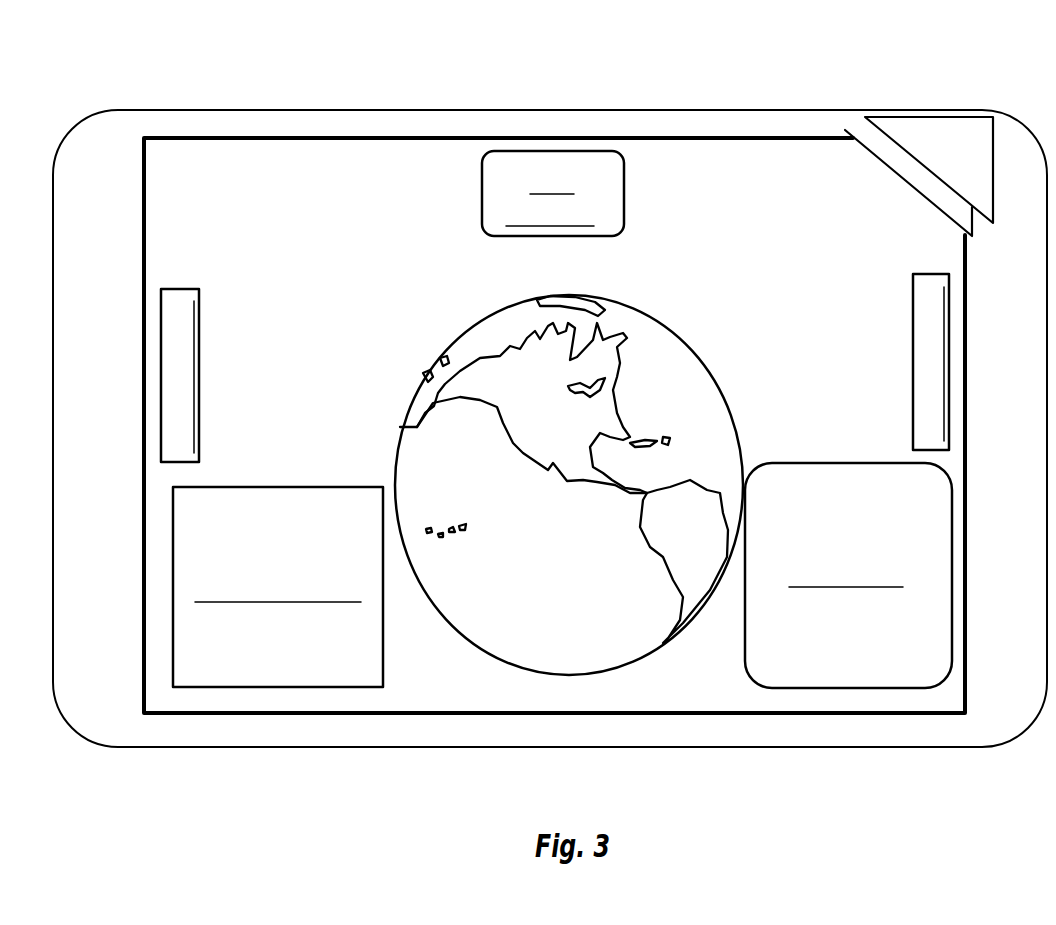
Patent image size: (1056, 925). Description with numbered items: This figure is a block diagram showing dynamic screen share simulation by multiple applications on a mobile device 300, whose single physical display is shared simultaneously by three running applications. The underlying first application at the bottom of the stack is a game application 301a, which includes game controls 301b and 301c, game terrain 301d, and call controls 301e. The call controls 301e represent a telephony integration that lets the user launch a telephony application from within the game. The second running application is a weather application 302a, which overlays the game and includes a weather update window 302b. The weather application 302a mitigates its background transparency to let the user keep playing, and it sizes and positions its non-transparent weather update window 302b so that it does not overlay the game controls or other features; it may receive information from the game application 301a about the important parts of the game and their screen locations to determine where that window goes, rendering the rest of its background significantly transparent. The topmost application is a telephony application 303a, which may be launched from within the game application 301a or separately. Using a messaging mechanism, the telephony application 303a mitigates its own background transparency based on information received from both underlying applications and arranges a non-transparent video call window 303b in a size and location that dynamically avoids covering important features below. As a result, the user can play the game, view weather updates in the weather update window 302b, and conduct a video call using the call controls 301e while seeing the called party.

The mobile device 300 is at (265, 110).
The game application 301a is at (190, 243).
The game control 301b is at (199, 358).
The game control 301c is at (913, 352).
The game terrain 301d is at (683, 342).
The call controls 301e is at (482, 190).
The weather application 302a is at (870, 147).
The weather update window 302b is at (245, 488).
The telephony application 303a is at (918, 143).
The video call window 303b is at (867, 462).